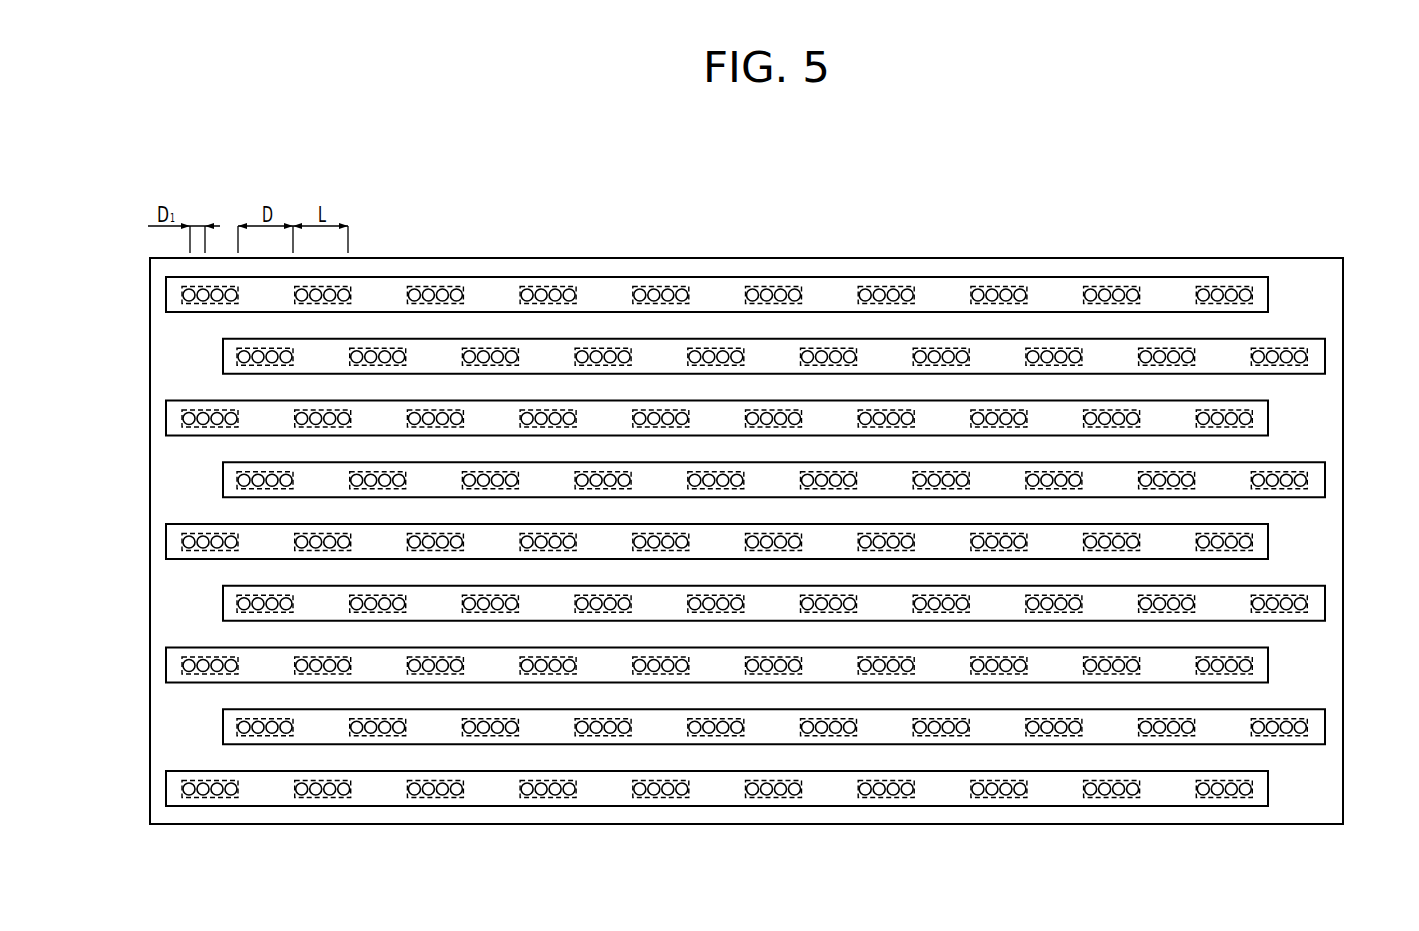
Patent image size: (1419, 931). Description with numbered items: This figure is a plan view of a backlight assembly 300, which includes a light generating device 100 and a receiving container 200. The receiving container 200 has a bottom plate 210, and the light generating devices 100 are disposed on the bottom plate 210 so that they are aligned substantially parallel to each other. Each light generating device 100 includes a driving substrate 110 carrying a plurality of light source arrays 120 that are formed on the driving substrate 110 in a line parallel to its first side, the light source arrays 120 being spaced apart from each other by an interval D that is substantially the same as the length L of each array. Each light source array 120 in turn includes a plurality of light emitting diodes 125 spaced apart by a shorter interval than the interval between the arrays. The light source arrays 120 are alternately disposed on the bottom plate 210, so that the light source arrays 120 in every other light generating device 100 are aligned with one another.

The light generating device 100 is at (707, 500).
The driving substrate 110 is at (376, 290).
The light source array 120 is at (185, 292).
The light emitting diode 125 is at (698, 525).
The receiving container 200 is at (750, 509).
The bottom plate 210 is at (1343, 456).
The backlight assembly 300 is at (750, 499).